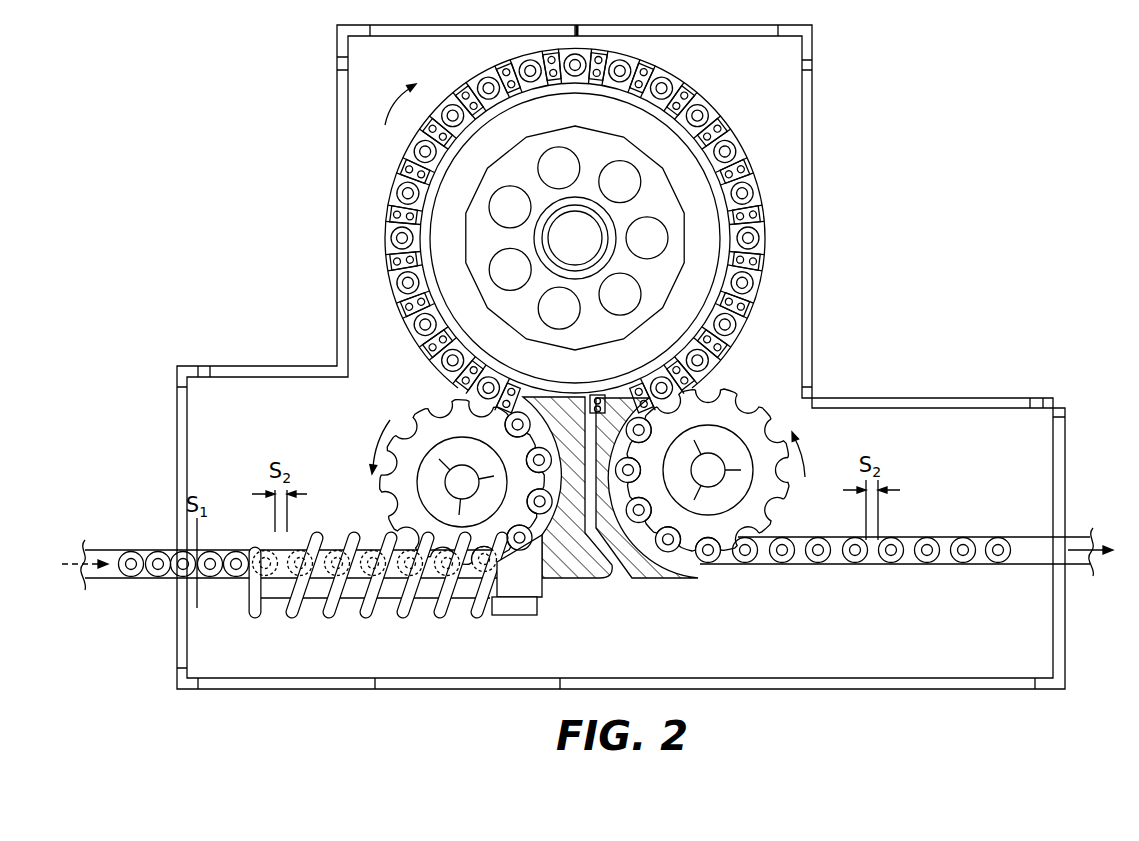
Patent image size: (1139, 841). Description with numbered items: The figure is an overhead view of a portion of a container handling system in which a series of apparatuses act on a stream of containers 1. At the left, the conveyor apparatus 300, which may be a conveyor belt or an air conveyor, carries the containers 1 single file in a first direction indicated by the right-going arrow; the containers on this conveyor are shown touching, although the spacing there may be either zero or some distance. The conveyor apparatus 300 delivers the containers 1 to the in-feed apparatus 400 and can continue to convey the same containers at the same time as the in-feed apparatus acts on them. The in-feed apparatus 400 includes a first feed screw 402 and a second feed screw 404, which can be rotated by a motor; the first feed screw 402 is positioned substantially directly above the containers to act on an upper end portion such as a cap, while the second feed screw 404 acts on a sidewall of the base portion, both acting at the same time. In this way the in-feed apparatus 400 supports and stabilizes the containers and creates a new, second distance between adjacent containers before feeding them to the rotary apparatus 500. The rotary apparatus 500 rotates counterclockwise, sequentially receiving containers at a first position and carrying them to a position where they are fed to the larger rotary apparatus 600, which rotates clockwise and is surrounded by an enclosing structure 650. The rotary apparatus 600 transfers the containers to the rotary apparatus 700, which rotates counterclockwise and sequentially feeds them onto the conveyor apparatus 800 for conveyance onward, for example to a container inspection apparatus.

The container 1 is at (385, 218).
The conveyor apparatus 300 is at (115, 549).
The in-feed apparatus 400 is at (378, 576).
The first feed screw 402 is at (356, 538).
The second feed screw 404 is at (487, 620).
The rotary apparatus 500 is at (410, 430).
The rotary apparatus 600 is at (648, 117).
The housing 650 is at (814, 196).
The rotary apparatus 700 is at (730, 405).
The conveyor apparatus 800 is at (1087, 537).